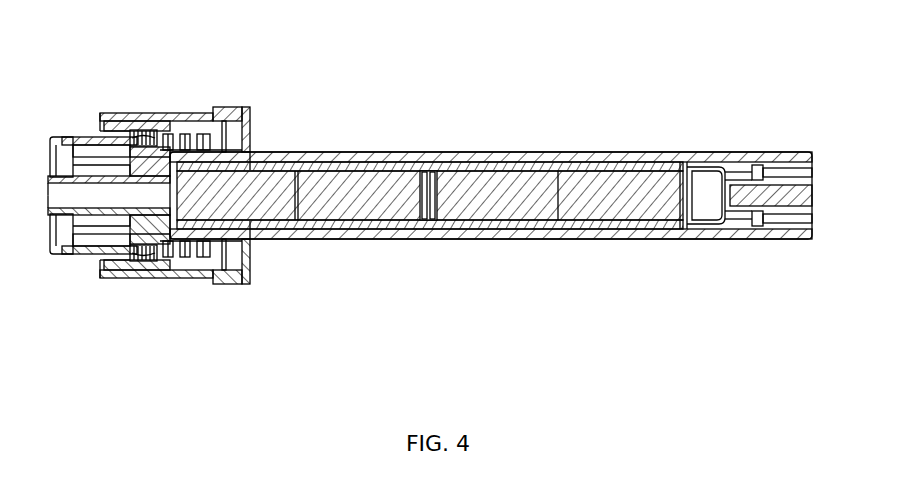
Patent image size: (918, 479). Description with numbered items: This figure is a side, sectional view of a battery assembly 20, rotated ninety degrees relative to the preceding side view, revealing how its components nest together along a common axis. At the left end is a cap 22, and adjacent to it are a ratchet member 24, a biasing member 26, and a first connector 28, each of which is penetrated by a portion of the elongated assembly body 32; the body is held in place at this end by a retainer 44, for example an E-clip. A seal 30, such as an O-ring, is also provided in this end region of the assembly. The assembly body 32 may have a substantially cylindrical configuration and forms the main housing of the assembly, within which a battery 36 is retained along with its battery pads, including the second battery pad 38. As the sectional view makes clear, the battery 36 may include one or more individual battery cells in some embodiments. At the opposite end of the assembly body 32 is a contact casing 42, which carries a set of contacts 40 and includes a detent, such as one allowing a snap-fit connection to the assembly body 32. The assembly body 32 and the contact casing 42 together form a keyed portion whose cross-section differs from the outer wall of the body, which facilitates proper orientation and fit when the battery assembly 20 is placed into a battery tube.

The battery assembly 20 is at (430, 202).
The cap 22 is at (118, 119).
The ratchet member 24 is at (95, 252).
The biasing member 26 is at (139, 252).
The first connector 28 is at (178, 122).
The seal 30 is at (242, 112).
The assembly body 32 is at (339, 150).
The battery 36 is at (455, 163).
The second battery pad 38 is at (693, 222).
The set of contacts 40 is at (778, 175).
The contact casing 42 is at (749, 156).
The retainer 44 is at (63, 122).